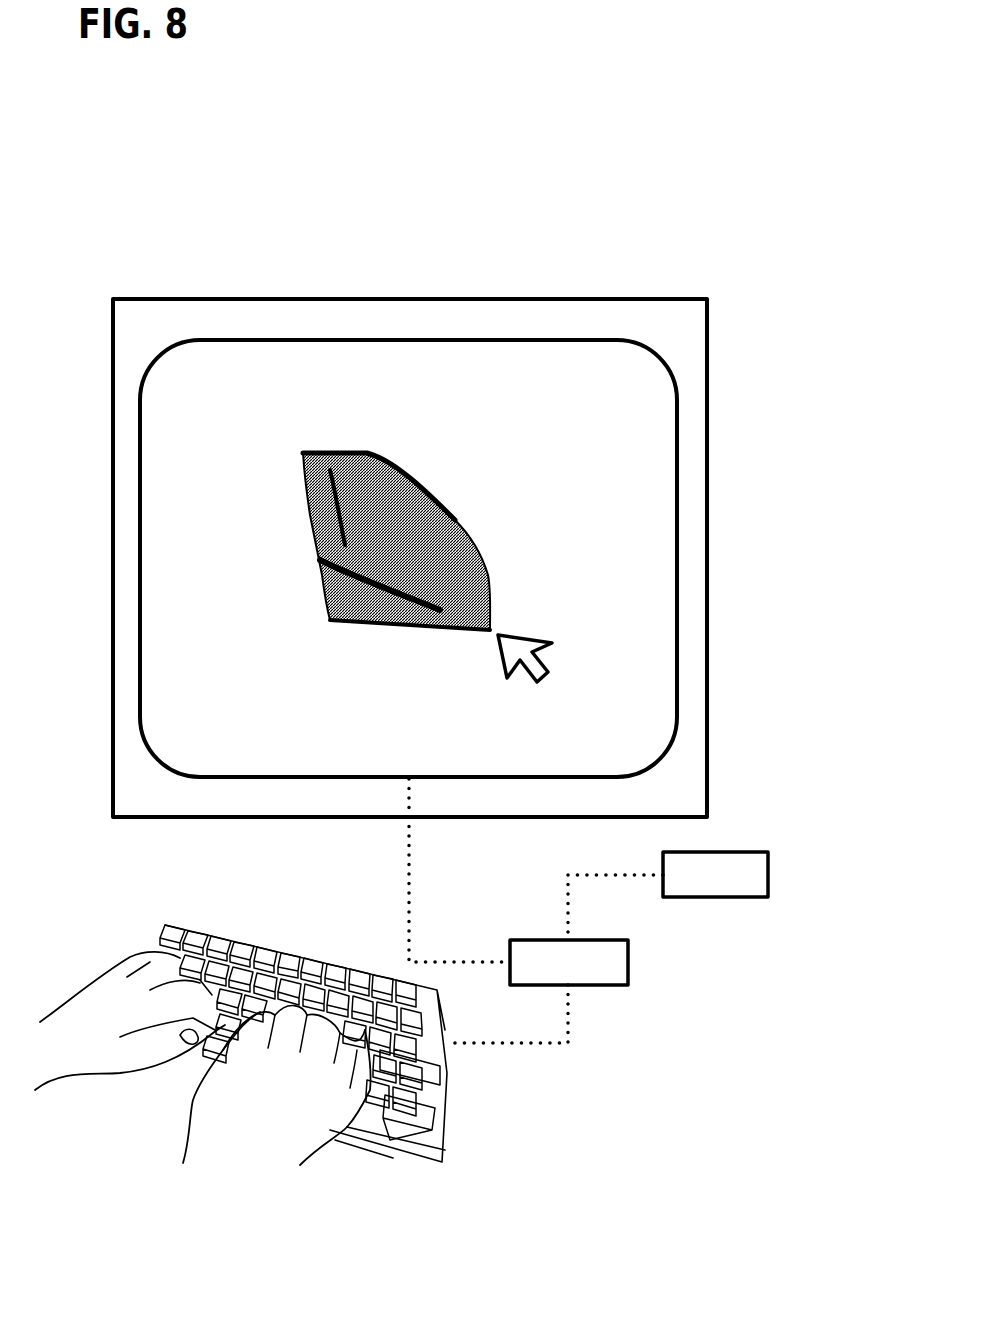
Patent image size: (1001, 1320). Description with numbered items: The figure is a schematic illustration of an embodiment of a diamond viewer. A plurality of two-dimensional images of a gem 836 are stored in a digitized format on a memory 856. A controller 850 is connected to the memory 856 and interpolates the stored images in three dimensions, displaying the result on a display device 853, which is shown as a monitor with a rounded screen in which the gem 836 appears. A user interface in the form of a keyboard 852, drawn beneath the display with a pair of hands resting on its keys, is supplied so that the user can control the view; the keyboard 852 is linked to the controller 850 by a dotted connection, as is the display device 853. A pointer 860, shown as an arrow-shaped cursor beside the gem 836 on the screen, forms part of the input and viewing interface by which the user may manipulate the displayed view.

The gem 836 is at (417, 486).
The display device 853 is at (645, 549).
The pointer 860 is at (550, 643).
The controller 850 is at (628, 962).
The memory 856 is at (768, 875).
The keyboard 852 is at (430, 1112).